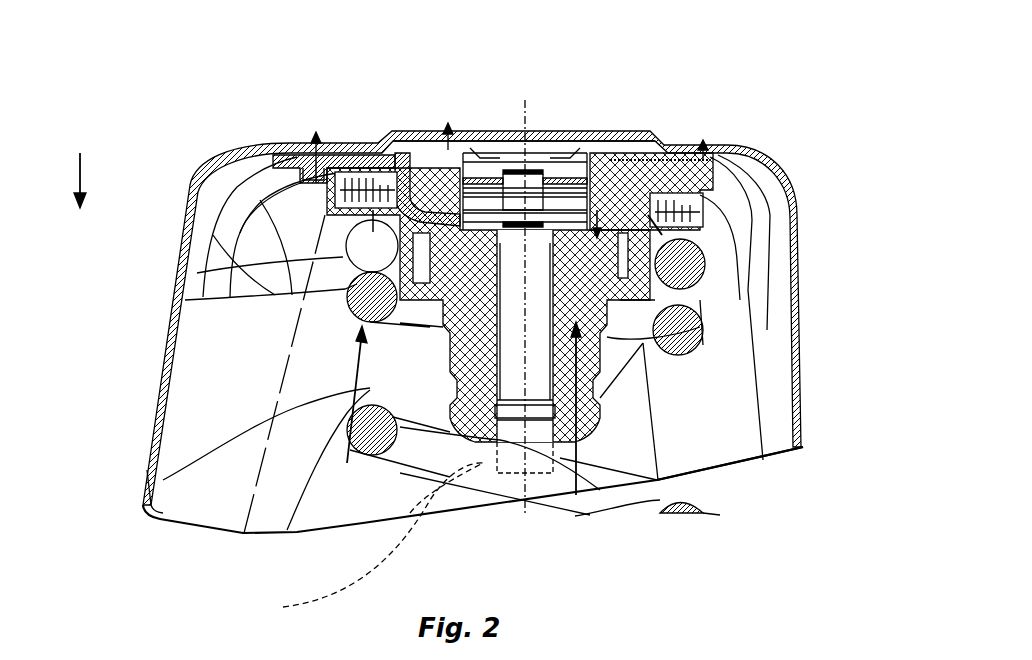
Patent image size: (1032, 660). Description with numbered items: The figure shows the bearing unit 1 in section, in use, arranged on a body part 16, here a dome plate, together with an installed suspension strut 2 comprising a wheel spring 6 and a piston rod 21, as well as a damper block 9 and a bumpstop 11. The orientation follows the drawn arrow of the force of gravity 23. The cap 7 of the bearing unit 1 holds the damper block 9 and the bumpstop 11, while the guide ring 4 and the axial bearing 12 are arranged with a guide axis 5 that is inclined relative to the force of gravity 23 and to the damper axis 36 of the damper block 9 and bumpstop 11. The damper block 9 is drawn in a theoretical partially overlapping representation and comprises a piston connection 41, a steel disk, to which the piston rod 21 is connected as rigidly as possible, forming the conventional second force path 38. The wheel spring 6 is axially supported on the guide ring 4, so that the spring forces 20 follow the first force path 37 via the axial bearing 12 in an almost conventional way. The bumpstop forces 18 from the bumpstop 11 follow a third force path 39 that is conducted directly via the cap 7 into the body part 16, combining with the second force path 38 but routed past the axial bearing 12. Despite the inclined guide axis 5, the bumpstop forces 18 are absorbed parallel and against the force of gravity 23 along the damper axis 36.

The bearing unit 1 is at (402, 147).
The suspension strut 2 is at (243, 540).
The guide ring 4 is at (245, 284).
The guide axis 5 is at (363, 388).
The wheel spring 6 is at (287, 530).
The cap 7 is at (700, 197).
The damper block 9 is at (597, 170).
The bumpstop 11 is at (603, 398).
The axial bearing 12 is at (690, 245).
The body part 16 is at (213, 167).
The bumpstop forces 18 is at (576, 450).
The spring forces 20 is at (143, 487).
The piston rod 21 is at (365, 542).
The force of gravity 23 is at (78, 172).
The damper axis 36 is at (528, 490).
The first force path 37 is at (343, 143).
The second force path 38 is at (485, 178).
The third force path 39 is at (658, 160).
The piston connection 41 is at (563, 180).